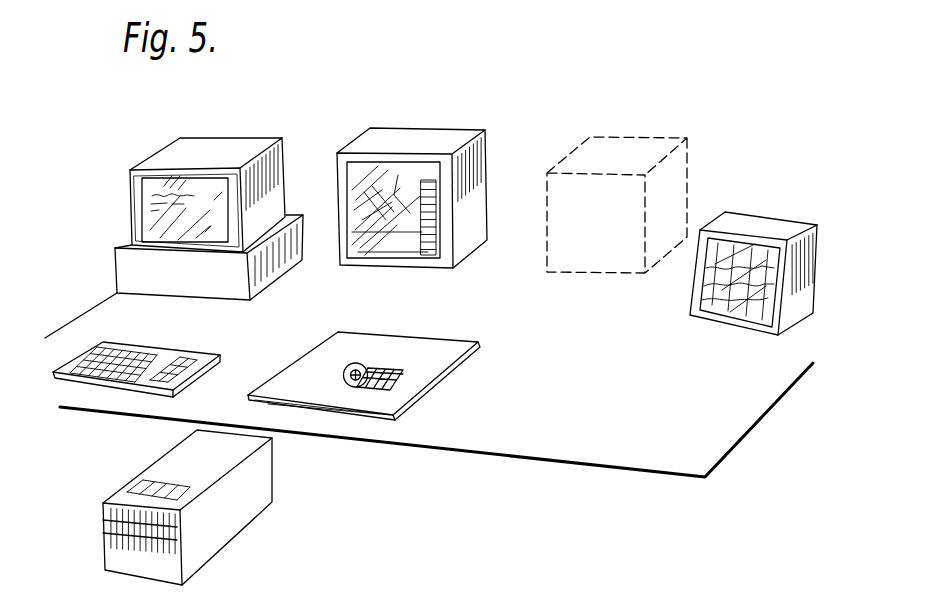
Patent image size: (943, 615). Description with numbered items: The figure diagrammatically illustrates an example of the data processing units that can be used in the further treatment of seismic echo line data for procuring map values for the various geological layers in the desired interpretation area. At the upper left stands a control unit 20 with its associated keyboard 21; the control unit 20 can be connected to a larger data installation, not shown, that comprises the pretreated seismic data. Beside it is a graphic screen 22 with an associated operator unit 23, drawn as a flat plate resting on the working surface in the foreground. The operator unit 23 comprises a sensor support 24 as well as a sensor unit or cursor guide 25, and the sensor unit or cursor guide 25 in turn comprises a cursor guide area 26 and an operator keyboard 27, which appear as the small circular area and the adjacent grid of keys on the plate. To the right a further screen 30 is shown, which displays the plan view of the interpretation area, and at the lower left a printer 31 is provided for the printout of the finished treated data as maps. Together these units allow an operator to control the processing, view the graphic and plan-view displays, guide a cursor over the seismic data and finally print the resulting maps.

The control unit 20 is at (282, 138).
The keyboard 21 is at (207, 358).
The graphic screen 22 is at (487, 142).
The operator unit 23 is at (375, 378).
The sensor support 24 is at (383, 343).
The sensor unit or cursor guide 25 is at (400, 375).
The cursor guide area 26 is at (355, 370).
The operator keyboard 27 is at (387, 383).
The further screen 30 is at (747, 218).
The printer 31 is at (262, 502).